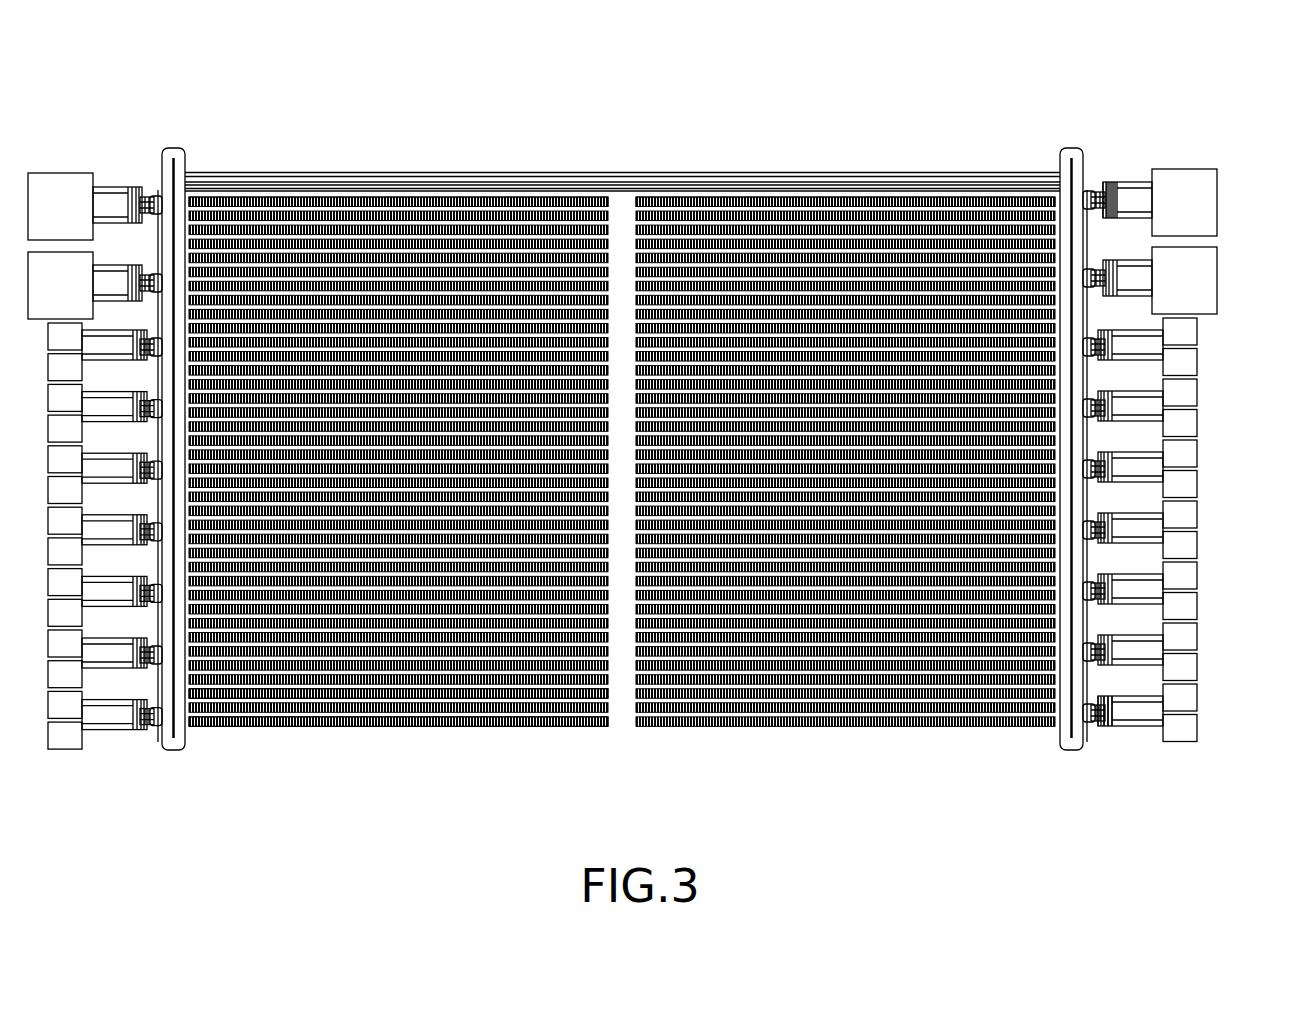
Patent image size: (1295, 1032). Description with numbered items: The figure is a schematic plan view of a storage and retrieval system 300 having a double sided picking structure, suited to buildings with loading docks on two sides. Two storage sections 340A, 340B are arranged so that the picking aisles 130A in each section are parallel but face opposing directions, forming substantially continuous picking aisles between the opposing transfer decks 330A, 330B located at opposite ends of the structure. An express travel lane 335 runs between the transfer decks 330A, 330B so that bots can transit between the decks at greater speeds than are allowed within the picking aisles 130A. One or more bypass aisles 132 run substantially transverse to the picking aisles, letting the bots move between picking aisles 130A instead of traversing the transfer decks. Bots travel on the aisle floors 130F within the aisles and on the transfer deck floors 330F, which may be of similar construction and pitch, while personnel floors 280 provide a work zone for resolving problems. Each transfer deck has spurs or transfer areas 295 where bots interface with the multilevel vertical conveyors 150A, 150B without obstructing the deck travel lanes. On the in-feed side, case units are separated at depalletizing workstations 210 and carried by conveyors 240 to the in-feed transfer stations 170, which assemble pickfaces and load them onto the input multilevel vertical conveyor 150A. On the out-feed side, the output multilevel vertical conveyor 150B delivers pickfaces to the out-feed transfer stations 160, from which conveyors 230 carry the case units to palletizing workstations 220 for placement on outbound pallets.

The storage and retrieval system 300 is at (345, 810).
The transfer deck floor 330F is at (166, 163).
The transfer deck 330A is at (188, 156).
The express travel lane 335 is at (543, 173).
The storage section 340A is at (415, 730).
The storage section 340B is at (815, 730).
The aisle floor 130F is at (445, 210).
The picking aisle 130A is at (612, 712).
The bypass aisle 132 is at (622, 208).
The personnel floor 280 is at (257, 698).
The transfer deck 330B is at (1065, 148).
The transfer area 295 is at (1090, 192).
The depalletizing workstation 210 is at (1220, 193).
The conveyor 240 is at (1137, 183).
The in-feed transfer station 170 is at (1118, 183).
The multilevel vertical conveyor 150A is at (1100, 192).
The multilevel vertical conveyor 150B is at (1100, 740).
The palletizing workstation 220 is at (1200, 700).
The conveyor 230 is at (1147, 730).
The out-feed transfer station 160 is at (1103, 735).